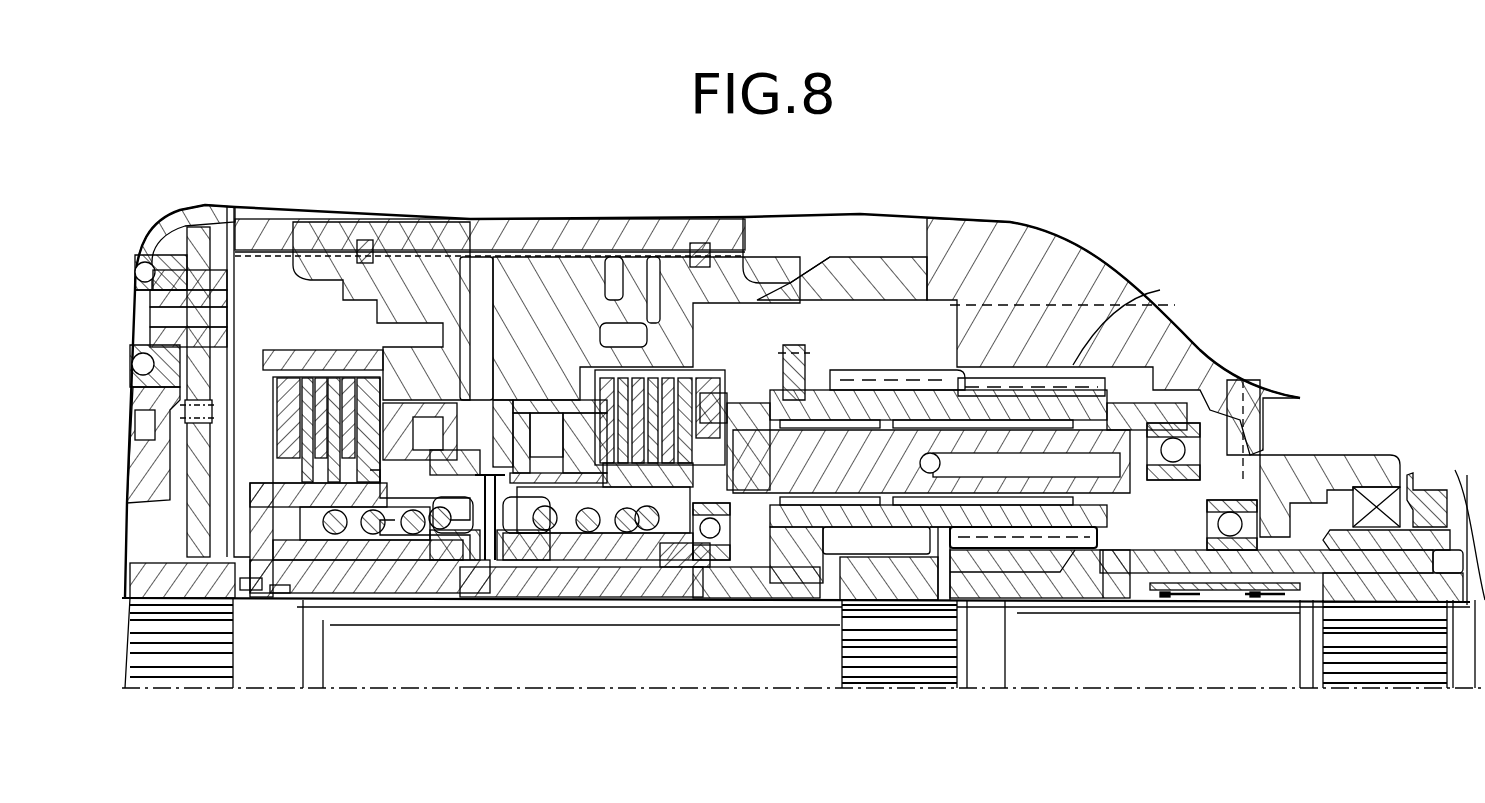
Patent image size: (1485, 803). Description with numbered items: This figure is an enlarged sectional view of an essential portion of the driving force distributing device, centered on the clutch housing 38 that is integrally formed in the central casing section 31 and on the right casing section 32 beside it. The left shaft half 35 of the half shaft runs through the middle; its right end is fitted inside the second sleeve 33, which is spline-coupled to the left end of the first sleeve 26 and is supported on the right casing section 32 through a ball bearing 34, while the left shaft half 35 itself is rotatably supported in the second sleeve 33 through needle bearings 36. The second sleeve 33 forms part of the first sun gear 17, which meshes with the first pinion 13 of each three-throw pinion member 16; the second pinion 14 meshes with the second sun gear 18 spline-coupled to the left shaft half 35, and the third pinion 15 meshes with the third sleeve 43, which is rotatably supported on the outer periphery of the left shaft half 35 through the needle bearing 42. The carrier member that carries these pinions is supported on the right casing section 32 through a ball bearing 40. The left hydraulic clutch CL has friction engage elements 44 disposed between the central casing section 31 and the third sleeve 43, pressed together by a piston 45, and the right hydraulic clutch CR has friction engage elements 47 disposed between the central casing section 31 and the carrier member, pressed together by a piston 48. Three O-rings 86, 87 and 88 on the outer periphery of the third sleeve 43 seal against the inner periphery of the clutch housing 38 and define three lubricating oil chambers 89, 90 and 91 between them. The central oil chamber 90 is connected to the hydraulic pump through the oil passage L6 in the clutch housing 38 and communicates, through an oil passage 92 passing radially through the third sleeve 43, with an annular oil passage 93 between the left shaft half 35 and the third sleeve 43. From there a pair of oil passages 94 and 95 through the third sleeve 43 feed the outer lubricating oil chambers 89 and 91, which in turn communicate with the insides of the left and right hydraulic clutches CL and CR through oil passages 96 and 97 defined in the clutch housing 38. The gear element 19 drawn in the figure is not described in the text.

The first pinion 13 is at (1125, 330).
The second pinion 14 is at (850, 372).
The third pinion 15 is at (787, 346).
The three-throw pinion member 16 is at (893, 362).
The first sun gear 17 is at (1057, 552).
The second sun gear 18 is at (858, 548).
The gear 19 is at (720, 600).
The first sleeve 26 is at (1453, 527).
The central casing section 31 is at (858, 262).
The right casing section 32 is at (1052, 283).
The second sleeve 33 is at (1257, 557).
The ball bearing 34 is at (1283, 478).
The left shaft half 35 is at (568, 690).
The needle bearings 36 is at (1273, 600).
The clutch housing 38 is at (694, 592).
The ball bearing 40 is at (1228, 405).
The needle bearing 42 is at (278, 598).
The third sleeve 43 is at (337, 610).
The friction engage elements 44 is at (337, 377).
The piston 45 is at (392, 395).
The friction engage elements 47 is at (627, 373).
The piston 48 is at (557, 380).
The O-ring 86 is at (455, 592).
The O-ring 87 is at (548, 588).
The O-ring 88 is at (653, 590).
The lubricating oil chamber 89 is at (425, 592).
The central oil chamber 90 is at (515, 592).
The lubricating oil chamber 91 is at (575, 590).
The oil passage 92 is at (490, 592).
The annular oil passage 93 is at (713, 603).
The oil passage 94 is at (388, 592).
The oil passage 95 is at (615, 590).
The oil passage 96 is at (345, 592).
The oil passage 97 is at (628, 575).
The left hydraulic clutch CL is at (306, 347).
The right hydraulic clutch CR is at (701, 353).
The oil passage L6 is at (493, 473).